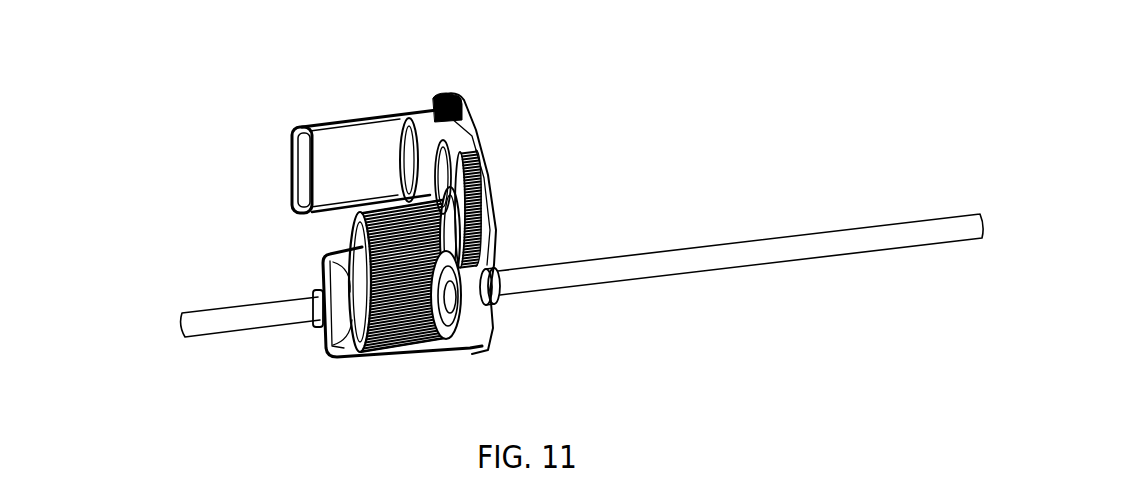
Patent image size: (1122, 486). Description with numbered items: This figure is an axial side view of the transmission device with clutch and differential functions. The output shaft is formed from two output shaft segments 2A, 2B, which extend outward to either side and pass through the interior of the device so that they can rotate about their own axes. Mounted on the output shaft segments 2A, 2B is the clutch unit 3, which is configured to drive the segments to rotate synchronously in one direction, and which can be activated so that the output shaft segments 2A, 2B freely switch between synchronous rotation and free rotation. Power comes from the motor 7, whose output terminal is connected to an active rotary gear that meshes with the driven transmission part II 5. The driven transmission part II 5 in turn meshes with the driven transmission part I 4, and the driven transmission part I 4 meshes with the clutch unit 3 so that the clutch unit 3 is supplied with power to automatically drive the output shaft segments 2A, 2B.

The output shaft segment 2A is at (202, 323).
The output shaft segment 2B is at (600, 273).
The clutch unit 3 is at (330, 272).
The driven transmission part I 4 is at (487, 202).
The driven transmission part II 5 is at (475, 147).
The motor 7 is at (330, 152).